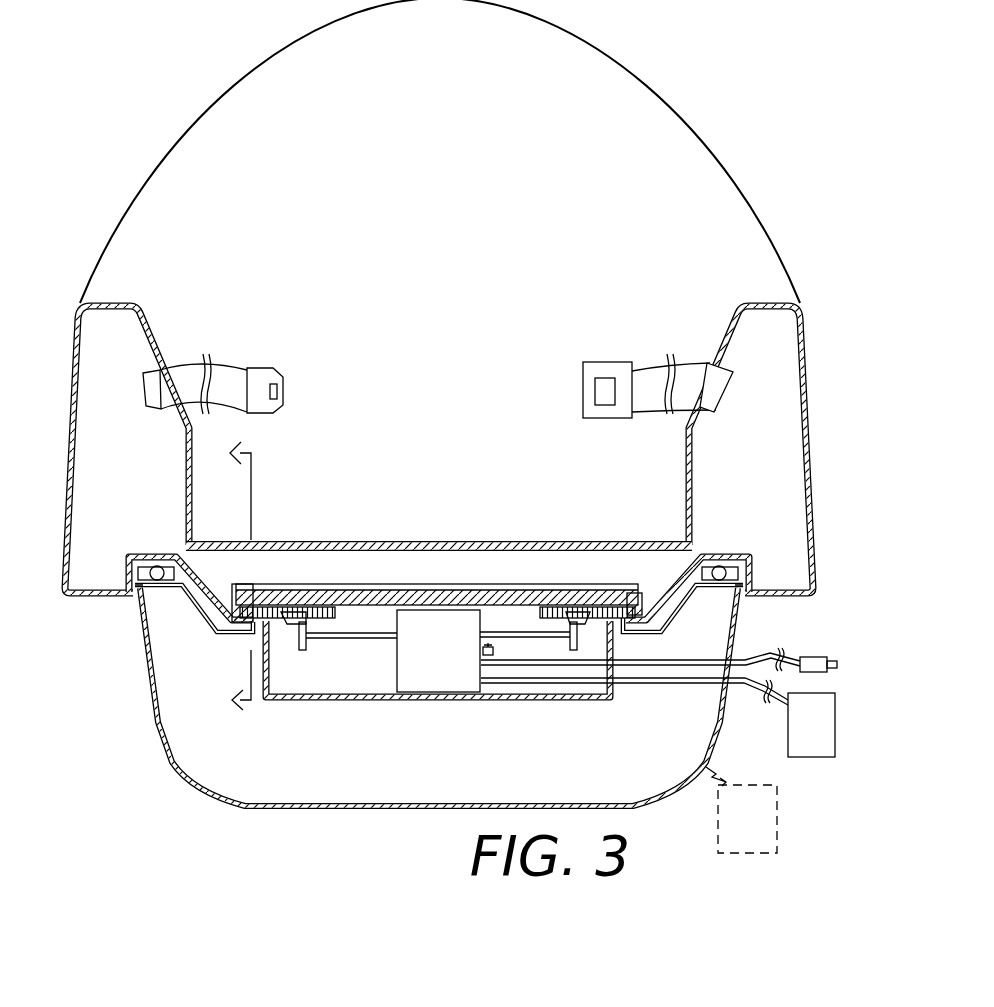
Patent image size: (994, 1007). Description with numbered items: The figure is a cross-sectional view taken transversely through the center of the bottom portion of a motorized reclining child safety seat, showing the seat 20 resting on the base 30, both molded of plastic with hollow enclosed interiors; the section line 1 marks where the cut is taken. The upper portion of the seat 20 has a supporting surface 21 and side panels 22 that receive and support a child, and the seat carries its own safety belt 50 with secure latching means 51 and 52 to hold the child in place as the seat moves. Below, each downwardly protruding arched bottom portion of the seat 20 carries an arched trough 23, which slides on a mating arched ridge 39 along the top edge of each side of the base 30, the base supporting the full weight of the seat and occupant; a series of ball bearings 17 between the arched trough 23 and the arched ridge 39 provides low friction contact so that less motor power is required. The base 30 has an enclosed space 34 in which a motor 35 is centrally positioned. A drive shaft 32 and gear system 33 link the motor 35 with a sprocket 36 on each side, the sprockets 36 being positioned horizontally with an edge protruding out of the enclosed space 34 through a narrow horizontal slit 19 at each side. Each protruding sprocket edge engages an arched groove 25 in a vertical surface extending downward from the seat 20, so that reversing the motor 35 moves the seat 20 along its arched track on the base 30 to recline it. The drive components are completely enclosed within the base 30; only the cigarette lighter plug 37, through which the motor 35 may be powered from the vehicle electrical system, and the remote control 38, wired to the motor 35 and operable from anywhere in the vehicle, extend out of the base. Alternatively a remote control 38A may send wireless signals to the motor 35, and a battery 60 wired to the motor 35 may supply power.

The section line 1 is at (228, 574).
The ball bearings 17 is at (138, 574).
The horizontal slit 19 is at (270, 598).
The seat 20 is at (645, 84).
The supporting surface 21 is at (458, 546).
The side panels 22 is at (160, 356).
The arched trough 23 is at (175, 556).
The arched groove 25 is at (208, 626).
The base 30 is at (166, 745).
The drive shaft 32 is at (345, 638).
The gear system 33 is at (296, 628).
The enclosed space 34 is at (602, 699).
The motor 35 is at (436, 692).
The sprockets 36 is at (350, 606).
The cigarette lighter plug 37 is at (822, 657).
The remote control 38 is at (788, 716).
The remote control 38A is at (778, 800).
The mating arched ridge 39 is at (153, 590).
The safety belt 50 is at (220, 362).
The latching means 51 is at (284, 380).
The latching means 52 is at (583, 385).
The battery 60 is at (493, 656).